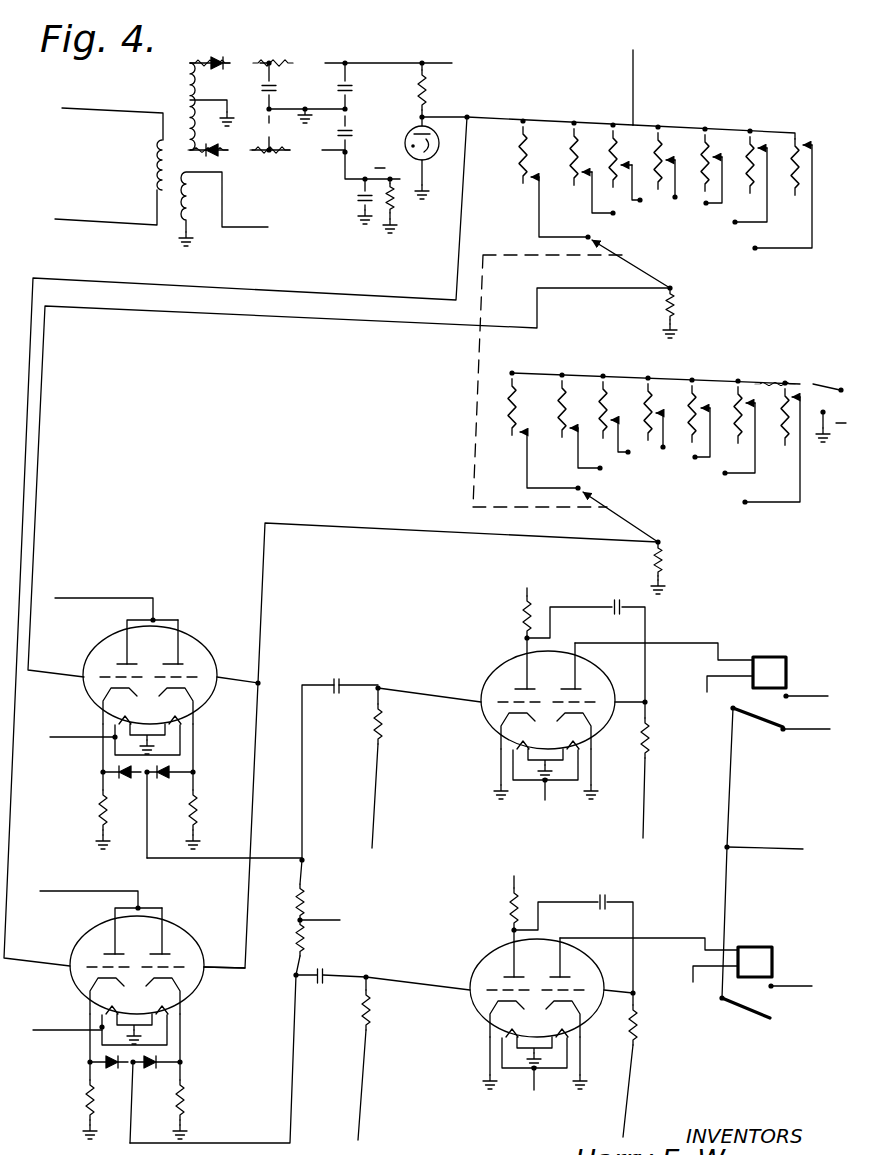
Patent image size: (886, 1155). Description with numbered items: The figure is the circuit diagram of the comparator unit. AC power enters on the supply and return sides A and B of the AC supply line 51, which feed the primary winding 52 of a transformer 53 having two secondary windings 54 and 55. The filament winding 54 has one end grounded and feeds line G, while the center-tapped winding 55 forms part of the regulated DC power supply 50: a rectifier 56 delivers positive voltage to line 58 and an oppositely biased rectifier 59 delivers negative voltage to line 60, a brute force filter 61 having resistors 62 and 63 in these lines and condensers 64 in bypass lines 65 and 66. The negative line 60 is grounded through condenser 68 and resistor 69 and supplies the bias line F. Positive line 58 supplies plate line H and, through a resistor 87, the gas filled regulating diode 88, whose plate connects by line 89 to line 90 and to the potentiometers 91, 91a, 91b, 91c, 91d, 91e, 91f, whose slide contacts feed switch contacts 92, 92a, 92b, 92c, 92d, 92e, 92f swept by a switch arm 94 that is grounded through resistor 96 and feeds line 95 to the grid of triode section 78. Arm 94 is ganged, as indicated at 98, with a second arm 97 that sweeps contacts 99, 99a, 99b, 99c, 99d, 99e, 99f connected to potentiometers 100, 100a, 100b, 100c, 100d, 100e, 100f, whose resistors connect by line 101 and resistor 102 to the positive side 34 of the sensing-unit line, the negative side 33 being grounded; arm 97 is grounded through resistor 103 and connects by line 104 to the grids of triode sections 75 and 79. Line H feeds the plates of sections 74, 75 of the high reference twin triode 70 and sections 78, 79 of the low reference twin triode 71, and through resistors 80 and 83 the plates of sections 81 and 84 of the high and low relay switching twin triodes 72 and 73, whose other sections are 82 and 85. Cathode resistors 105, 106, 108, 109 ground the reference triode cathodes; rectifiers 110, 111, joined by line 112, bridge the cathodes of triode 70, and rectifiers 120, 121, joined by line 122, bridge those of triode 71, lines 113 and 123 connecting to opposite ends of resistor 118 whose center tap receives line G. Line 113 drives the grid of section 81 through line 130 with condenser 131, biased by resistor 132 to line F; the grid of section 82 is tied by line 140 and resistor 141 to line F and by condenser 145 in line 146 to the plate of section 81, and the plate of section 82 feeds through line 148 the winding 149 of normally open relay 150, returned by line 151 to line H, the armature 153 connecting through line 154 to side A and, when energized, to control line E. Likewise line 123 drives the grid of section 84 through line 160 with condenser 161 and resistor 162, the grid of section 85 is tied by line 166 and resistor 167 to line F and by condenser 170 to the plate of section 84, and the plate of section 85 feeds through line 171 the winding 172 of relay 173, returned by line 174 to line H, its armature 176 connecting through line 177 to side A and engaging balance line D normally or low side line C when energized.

The negative side of sensing unit line 33 is at (835, 412).
The positive voltage side of sensing unit line 34 is at (842, 393).
The regulated DC power supply 50 is at (348, 57).
The AC supply line 51 is at (78, 116).
The primary winding 52 is at (157, 165).
The transformer 53 is at (192, 45).
The secondary winding 54 is at (192, 233).
The secondary winding 55 is at (183, 85).
The rectifier 56 is at (218, 55).
The positive output voltage line 58 is at (405, 56).
The rectifier 59 is at (213, 143).
The negative voltage line 60 is at (345, 185).
The brute force filter 61 is at (318, 162).
The resistor 62 is at (312, 60).
The resistor 63 is at (297, 160).
The condenser 64 is at (282, 90).
The bypass line 65 is at (267, 100).
The bypass line 66 is at (351, 95).
The condenser 68 is at (360, 208).
The resistor 69 is at (395, 210).
The high reference twin triode 70 is at (70, 993).
The low reference twin triode 71 is at (65, 650).
The high relay switching twin triode 72 is at (470, 1010).
The low relay switching twin triode 73 is at (494, 652).
The triode section 74 is at (100, 932).
The triode section 75 is at (178, 944).
The triode section 78 is at (113, 644).
The triode section 79 is at (188, 656).
The resistor 80 is at (508, 904).
The triode section 81 is at (493, 962).
The triode section 82 is at (583, 967).
The resistor 83 is at (520, 616).
The triode section 84 is at (512, 666).
The triode section 85 is at (587, 673).
The resistor 87 is at (432, 100).
The gas filled regulating diode 88 is at (403, 142).
The line 89 is at (505, 117).
The line 90 is at (463, 229).
The potentiometer 91 is at (527, 110).
The potentiometer 91a is at (592, 94).
The potentiometer 91b is at (630, 94).
The potentiometer 91c is at (677, 98).
The potentiometer 91d is at (712, 126).
The potentiometer 91e is at (765, 102).
The potentiometer 91f is at (815, 104).
The switch contact 92 is at (585, 241).
The switch contact 92a is at (610, 215).
The switch contact 92b is at (639, 211).
The switch contact 92c is at (678, 209).
The switch contact 92d is at (708, 206).
The switch contact 92e is at (737, 223).
The switch contact 92f is at (757, 250).
The movable switch arm contact 94 is at (641, 273).
The line 95 is at (333, 322).
The resistor 96 is at (661, 299).
The switch arm 97 is at (645, 533).
The ganging coupling 98 is at (480, 412).
The switch contact 99 is at (576, 492).
The switch contact 99a is at (598, 470).
The switch contact 99b is at (628, 464).
The switch contact 99c is at (665, 458).
The switch contact 99d is at (695, 458).
The switch contact 99e is at (727, 473).
The switch contact 99f is at (746, 502).
The potentiometer 100 is at (526, 354).
The potentiometer 100a is at (584, 358).
The potentiometer 100b is at (628, 358).
The potentiometer 100c is at (672, 362).
The potentiometer 100d is at (718, 364).
The potentiometer 100e is at (762, 366).
The potentiometer 100f is at (803, 367).
The line 101 is at (555, 376).
The resistor 102 is at (805, 378).
The resistor 103 is at (665, 568).
The line 104 is at (268, 556).
The cathode resistor 105 is at (85, 1098).
The cathode resistor 106 is at (185, 1095).
The cathode resistor 108 is at (94, 805).
The cathode resistor 109 is at (198, 812).
The rectifier 110 is at (107, 1053).
The rectifier 111 is at (156, 1056).
The line 112 is at (130, 1080).
The line 113 is at (130, 1122).
The resistor 118 is at (294, 907).
The rectifier 120 is at (120, 763).
The rectifier 121 is at (169, 763).
The line 122 is at (143, 790).
The line 123 is at (140, 846).
The line 130 is at (390, 975).
The condenser 131 is at (323, 970).
The resistor 132 is at (358, 1008).
The line 140 is at (636, 1003).
The resistor 141 is at (636, 1027).
The condenser 145 is at (608, 901).
The line 146 is at (635, 922).
The line 148 is at (658, 937).
The relay winding 149 is at (773, 967).
The normally open relay 150 is at (752, 945).
The line 151 is at (713, 968).
The armature 153 is at (753, 1017).
The line 154 is at (727, 889).
The line 160 is at (414, 688).
The condenser 161 is at (338, 683).
The resistor 162 is at (372, 726).
The line 166 is at (645, 712).
The resistor 167 is at (648, 742).
The condenser 170 is at (614, 612).
The line 171 is at (698, 630).
The relay winding 172 is at (790, 668).
The relay 173 is at (767, 653).
The line 174 is at (728, 678).
The armature 176 is at (766, 722).
The line 177 is at (730, 800).